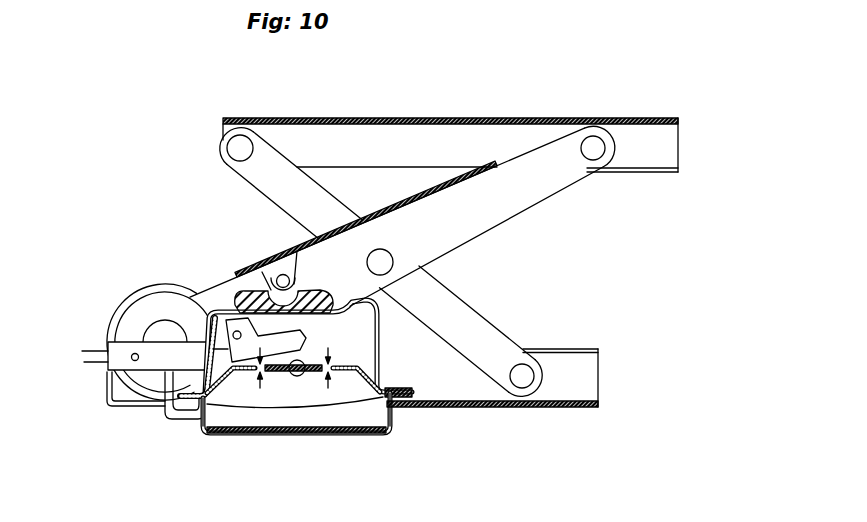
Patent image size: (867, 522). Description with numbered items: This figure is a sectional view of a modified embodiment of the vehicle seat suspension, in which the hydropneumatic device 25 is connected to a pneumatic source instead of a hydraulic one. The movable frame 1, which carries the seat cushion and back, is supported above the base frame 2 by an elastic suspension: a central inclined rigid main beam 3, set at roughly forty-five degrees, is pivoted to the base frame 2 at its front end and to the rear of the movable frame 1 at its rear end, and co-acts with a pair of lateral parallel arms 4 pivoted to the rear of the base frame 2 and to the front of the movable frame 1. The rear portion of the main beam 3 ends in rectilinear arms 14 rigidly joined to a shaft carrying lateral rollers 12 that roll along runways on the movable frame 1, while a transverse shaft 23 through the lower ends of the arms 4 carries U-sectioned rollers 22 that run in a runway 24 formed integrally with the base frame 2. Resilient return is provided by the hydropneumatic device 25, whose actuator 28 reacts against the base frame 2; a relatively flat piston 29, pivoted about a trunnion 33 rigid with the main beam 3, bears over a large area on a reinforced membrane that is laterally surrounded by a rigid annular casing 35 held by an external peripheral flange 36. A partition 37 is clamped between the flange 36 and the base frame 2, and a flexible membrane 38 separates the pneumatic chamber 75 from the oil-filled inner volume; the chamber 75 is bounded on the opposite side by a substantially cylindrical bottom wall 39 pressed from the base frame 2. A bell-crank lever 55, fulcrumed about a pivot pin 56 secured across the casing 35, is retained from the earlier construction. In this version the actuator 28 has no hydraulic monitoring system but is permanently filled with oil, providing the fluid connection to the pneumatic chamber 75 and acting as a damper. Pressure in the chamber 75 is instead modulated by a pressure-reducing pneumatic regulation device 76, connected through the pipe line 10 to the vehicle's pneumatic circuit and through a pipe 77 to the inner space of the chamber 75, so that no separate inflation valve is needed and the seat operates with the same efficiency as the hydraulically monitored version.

The movable frame 1 is at (447, 133).
The base frame 2 is at (473, 407).
The main beam 3 is at (446, 193).
The lateral parallel arms 4 is at (265, 188).
The pipe line 10 is at (93, 359).
The lateral rollers 12 is at (610, 158).
The rectilinear arms 14 is at (545, 188).
The U-sectioned rollers 22 is at (547, 356).
The transverse shaft 23 is at (521, 386).
The runway 24 is at (596, 348).
The hydropneumatic device 25 is at (189, 272).
The hydraulic actuator 28 is at (369, 254).
The piston 29 is at (350, 256).
The trunnion 33 is at (283, 274).
The rigid annular casing 35 is at (386, 363).
The external peripheral flange 36 is at (410, 389).
The partition 37 is at (343, 374).
The flexible membrane 38 is at (232, 428).
The bottom wall 39 is at (347, 423).
The bell-crank lever 55 is at (264, 323).
The pivot pin 56 is at (213, 320).
The pneumatic chamber 75 is at (293, 417).
The pneumatic regulation device 76 is at (143, 352).
The pipe 77 is at (163, 414).